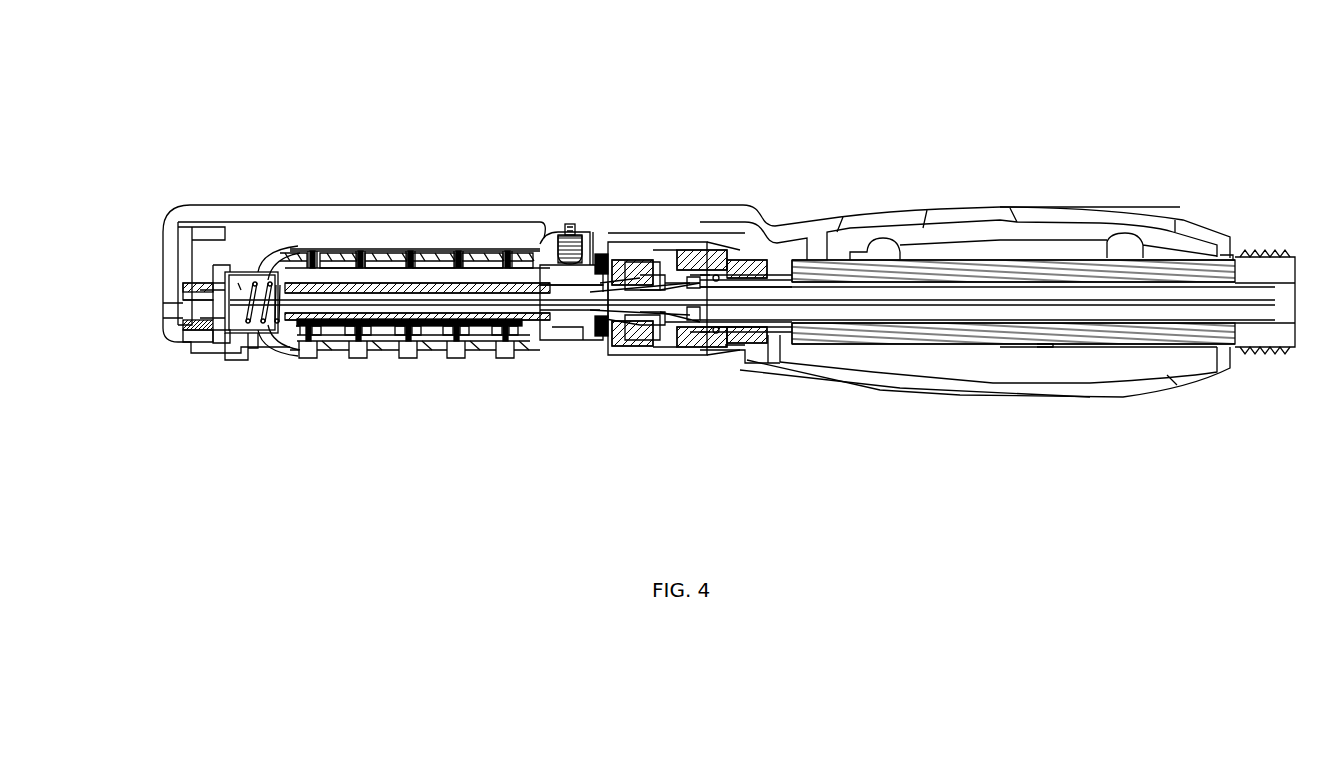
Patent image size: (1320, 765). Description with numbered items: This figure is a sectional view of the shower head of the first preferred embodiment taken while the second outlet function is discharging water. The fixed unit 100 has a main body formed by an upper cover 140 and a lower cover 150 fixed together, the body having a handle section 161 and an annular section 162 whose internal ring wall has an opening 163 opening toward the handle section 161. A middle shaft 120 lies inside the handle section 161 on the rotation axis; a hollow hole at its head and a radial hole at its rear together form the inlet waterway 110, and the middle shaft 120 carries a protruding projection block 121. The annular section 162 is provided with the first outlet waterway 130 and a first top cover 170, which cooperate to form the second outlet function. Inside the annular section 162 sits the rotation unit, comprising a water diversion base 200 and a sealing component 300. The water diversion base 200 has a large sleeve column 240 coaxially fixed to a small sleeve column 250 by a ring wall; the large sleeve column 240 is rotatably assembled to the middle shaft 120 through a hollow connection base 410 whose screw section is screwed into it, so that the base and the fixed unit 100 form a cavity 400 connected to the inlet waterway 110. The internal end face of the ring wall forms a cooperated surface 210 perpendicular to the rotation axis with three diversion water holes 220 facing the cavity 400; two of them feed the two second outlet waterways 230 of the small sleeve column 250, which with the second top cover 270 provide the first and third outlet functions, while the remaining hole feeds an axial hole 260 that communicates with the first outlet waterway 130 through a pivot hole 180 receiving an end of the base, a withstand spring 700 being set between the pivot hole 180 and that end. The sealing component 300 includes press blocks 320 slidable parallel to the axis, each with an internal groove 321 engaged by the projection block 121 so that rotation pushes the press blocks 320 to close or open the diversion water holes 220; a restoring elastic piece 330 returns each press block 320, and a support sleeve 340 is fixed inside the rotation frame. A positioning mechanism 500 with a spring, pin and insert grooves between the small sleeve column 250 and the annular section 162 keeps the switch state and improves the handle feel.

The fixed unit 100 is at (786, 108).
The inlet waterway 110 is at (1063, 308).
The middle shaft 120 is at (1067, 275).
The projection block 121 is at (638, 350).
The first outlet waterway 130 is at (198, 312).
The upper cover 140 is at (895, 225).
The lower cover 150 is at (953, 388).
The handle section 161 is at (1032, 203).
The annular section 162 is at (418, 203).
The opening 163 is at (730, 350).
The first top cover 170 is at (233, 352).
The pivot hole 180 is at (238, 312).
The water diversion base 200 is at (322, 283).
The cooperated surface 210 is at (597, 253).
The diversion water holes 220 is at (562, 250).
The second outlet waterways 230 is at (548, 325).
The large sleeve column 240 is at (665, 355).
The small sleeve column 250 is at (397, 287).
The axial hole 260 is at (413, 300).
The second top cover 270 is at (445, 357).
The sealing component 300 is at (668, 258).
The press blocks 320 is at (625, 275).
The groove 321 is at (627, 272).
The restoring elastic piece 330 is at (645, 262).
The support sleeve 340 is at (678, 347).
The cavity 400 is at (625, 348).
The connection base 410 is at (715, 255).
The positioning mechanism 500 is at (550, 247).
The withstand spring 700 is at (245, 280).